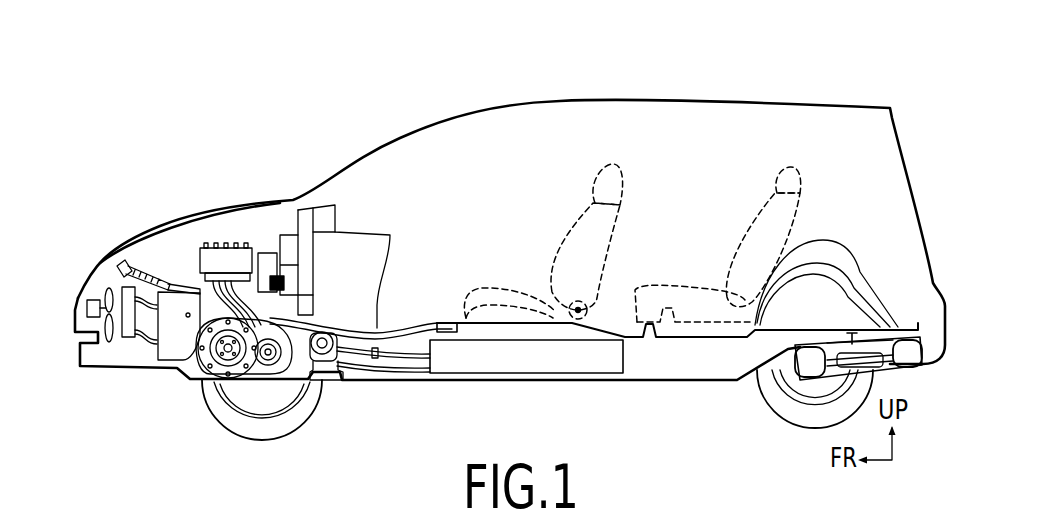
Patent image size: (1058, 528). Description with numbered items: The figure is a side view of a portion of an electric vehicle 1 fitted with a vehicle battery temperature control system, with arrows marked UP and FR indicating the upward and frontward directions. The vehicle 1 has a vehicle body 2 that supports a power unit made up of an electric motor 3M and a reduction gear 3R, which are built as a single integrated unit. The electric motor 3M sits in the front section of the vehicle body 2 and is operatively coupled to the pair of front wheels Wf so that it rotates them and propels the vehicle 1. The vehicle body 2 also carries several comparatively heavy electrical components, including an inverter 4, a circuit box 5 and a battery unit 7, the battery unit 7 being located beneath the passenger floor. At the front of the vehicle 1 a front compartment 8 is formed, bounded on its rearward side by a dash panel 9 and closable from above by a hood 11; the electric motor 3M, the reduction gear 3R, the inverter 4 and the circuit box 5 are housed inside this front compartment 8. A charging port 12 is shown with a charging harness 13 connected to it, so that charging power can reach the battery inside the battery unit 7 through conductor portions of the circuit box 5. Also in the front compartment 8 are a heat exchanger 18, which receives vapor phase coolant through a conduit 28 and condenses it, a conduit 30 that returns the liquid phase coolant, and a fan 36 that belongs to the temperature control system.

The electric vehicle 1 is at (710, 97).
The vehicle body 2 is at (346, 386).
The electric motor 3M is at (226, 378).
The reduction gear 3R is at (273, 377).
The inverter 4 is at (222, 257).
The circuit box 5 is at (273, 262).
The battery unit 7 is at (500, 360).
The front compartment 8 is at (178, 240).
The dash panel 9 is at (345, 205).
The hood 11 is at (143, 230).
The charging port 12 is at (123, 260).
The charging harness 13 is at (167, 345).
The heat exchanger 18 is at (123, 350).
The conduit 28 is at (112, 300).
The conduit 30 is at (153, 325).
The fan 36 is at (88, 310).
The front wheels Wf is at (300, 400).